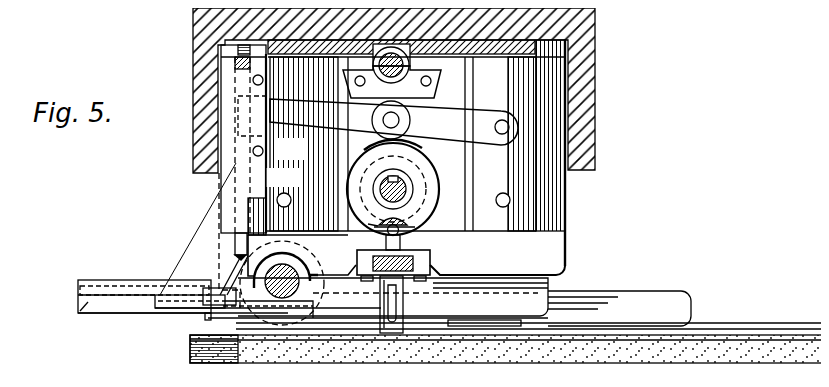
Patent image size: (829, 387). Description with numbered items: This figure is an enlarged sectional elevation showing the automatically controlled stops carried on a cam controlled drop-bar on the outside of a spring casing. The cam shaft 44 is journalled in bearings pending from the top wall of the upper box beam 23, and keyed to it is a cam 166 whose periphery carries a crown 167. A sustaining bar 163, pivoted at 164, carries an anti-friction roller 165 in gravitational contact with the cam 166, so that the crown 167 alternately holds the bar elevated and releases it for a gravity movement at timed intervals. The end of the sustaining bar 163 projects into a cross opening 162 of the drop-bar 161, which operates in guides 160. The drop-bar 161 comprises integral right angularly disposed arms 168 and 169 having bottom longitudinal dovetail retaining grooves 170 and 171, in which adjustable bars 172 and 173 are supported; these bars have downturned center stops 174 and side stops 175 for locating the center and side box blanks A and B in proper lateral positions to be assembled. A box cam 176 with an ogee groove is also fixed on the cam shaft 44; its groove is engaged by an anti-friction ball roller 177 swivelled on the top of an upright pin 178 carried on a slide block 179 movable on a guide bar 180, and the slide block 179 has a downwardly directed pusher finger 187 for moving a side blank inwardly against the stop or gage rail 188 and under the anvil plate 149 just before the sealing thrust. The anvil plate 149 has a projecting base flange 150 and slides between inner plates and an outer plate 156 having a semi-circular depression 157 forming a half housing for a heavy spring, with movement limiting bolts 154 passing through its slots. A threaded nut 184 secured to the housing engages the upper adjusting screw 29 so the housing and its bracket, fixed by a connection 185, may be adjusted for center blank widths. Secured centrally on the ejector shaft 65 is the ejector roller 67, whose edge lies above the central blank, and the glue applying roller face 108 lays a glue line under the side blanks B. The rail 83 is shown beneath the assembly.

The upper box beam 23 is at (565, 7).
The connection 185 is at (257, 35).
The outer plate 156 is at (406, 158).
The upper adjusting screw 29 is at (429, 65).
The semi-circular depression 157 is at (387, 113).
The threaded nut 184 is at (362, 48).
The sustaining bar 163 is at (394, 121).
The anti-friction roller 165 is at (414, 112).
The pivot 164 is at (480, 119).
The cam 166 is at (421, 163).
The crown 167 is at (362, 138).
The cam shaft 44 is at (397, 182).
The movement limiting bolt 154 is at (276, 186).
The box cam 176 is at (428, 211).
The upright pin 178 is at (423, 228).
The anti-friction ball roller 177 is at (360, 219).
The slide block 179 is at (366, 245).
The guide bar 180 is at (367, 253).
The ejector roller 67 is at (306, 259).
The ejector shaft 65 is at (275, 291).
The pusher finger 187 is at (387, 326).
The anvil plate 149 is at (393, 297).
The base flange 150 is at (497, 308).
The side stop 175 is at (315, 308).
The stop or gage rail 188 is at (623, 292).
The smooth flat circumferential face 108 is at (514, 352).
The rail 83 is at (633, 342).
The center box blank A is at (573, 327).
The side box blank B is at (473, 312).
The arm 168 is at (70, 277).
The dovetail retaining groove 170 is at (123, 278).
The adjustable bar 172 is at (72, 303).
The arm 169 is at (148, 288).
The dovetail retaining groove 171 is at (187, 297).
The adjustable bar 173 is at (202, 307).
The center stop 174 is at (198, 312).
The drop-bar 161 is at (230, 55).
The guide 160 is at (210, 40).
The cross opening 162 is at (233, 115).